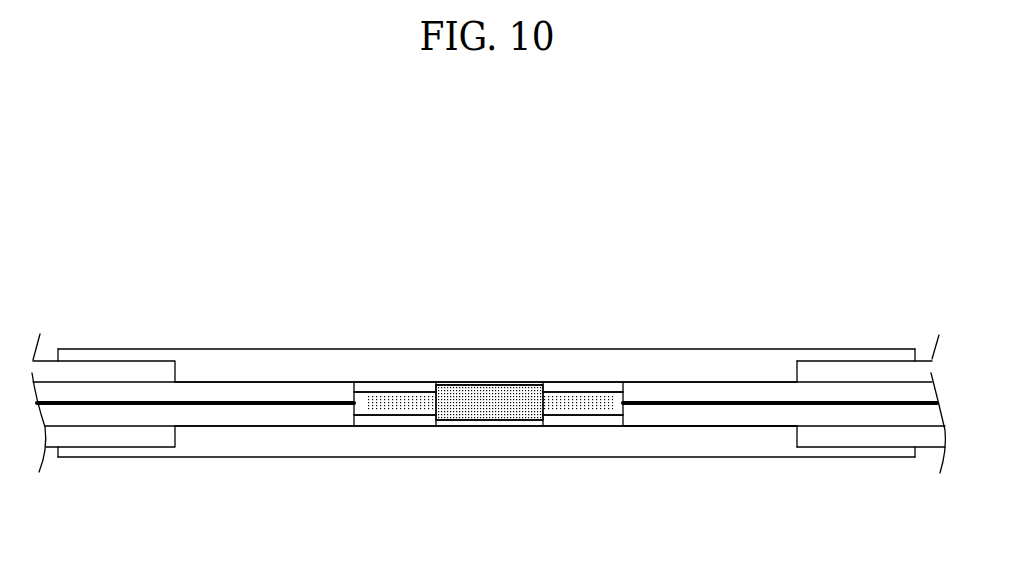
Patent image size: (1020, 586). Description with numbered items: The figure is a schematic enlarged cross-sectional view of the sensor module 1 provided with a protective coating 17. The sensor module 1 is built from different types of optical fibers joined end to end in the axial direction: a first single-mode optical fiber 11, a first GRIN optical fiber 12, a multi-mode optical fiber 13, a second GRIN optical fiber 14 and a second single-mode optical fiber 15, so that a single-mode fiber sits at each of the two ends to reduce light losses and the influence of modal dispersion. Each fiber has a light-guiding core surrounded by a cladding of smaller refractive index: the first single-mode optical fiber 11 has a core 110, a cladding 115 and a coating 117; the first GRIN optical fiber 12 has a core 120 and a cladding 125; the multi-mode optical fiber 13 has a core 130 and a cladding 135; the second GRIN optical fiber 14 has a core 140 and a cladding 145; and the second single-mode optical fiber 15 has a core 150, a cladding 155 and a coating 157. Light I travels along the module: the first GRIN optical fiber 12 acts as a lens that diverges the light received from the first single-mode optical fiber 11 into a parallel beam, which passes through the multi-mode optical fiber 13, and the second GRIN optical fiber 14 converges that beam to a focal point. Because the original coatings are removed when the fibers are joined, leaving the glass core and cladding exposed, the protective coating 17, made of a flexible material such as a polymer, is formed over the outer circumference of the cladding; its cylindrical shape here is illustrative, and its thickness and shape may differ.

The sensor module 1 is at (707, 262).
The first single-mode optical fiber 11 is at (250, 427).
The first GRIN optical fiber 12 is at (390, 427).
The multi-mode optical fiber 13 is at (482, 427).
The second GRIN optical fiber 14 is at (577, 427).
The second single-mode optical fiber 15 is at (690, 427).
The protective coating 17 is at (328, 360).
The core 110 is at (210, 400).
The cladding 115 is at (270, 392).
The coating 117 is at (142, 432).
The core 120 is at (368, 386).
The cladding 125 is at (410, 386).
The core 130 is at (463, 391).
The cladding 135 is at (522, 386).
The core 140 is at (570, 393).
The cladding 145 is at (610, 389).
The core 150 is at (689, 398).
The cladding 155 is at (748, 389).
The coating 157 is at (879, 377).
The light I is at (493, 396).